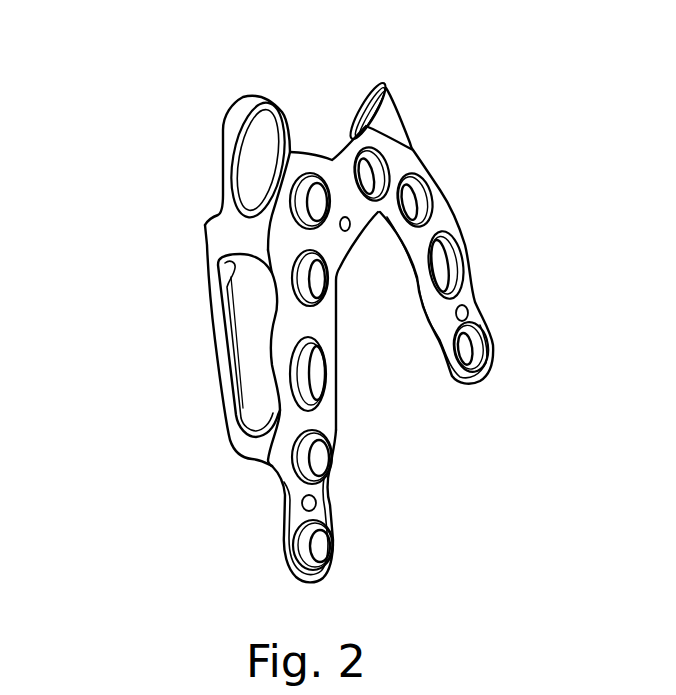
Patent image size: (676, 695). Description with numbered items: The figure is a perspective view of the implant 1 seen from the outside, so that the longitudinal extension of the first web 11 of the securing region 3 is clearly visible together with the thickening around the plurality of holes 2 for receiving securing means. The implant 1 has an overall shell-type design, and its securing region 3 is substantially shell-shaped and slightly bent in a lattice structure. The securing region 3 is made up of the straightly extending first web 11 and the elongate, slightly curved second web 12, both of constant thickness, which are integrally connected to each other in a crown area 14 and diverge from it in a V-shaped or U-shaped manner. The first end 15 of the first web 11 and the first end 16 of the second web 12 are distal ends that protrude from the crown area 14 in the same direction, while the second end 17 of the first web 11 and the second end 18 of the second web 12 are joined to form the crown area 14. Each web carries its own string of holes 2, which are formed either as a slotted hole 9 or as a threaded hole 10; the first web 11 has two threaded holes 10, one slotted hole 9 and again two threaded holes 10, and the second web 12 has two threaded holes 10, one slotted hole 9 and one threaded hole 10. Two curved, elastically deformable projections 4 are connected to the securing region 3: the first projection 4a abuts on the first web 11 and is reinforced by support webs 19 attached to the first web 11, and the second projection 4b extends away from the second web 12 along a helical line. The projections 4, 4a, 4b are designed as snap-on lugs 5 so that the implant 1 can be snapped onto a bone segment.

The implant 1 is at (200, 211).
The holes for receiving securing means 2 is at (364, 203).
The securing region 3 is at (321, 425).
The projections 4 is at (302, 264).
The first projection 4a is at (216, 249).
The second projection 4b is at (386, 120).
The snap-on lugs 5 is at (302, 264).
The slotted hole 9 is at (453, 267).
The threaded hole 10 is at (310, 172).
The first web 11 is at (285, 337).
The second web 12 is at (437, 223).
The crown area 14 is at (337, 183).
The first end of the first web 15 is at (266, 572).
The first end of the second web 16 is at (486, 392).
The second end of the first web 17 is at (250, 169).
The second end of the second web 18 is at (387, 89).
The support webs 19 is at (250, 125).